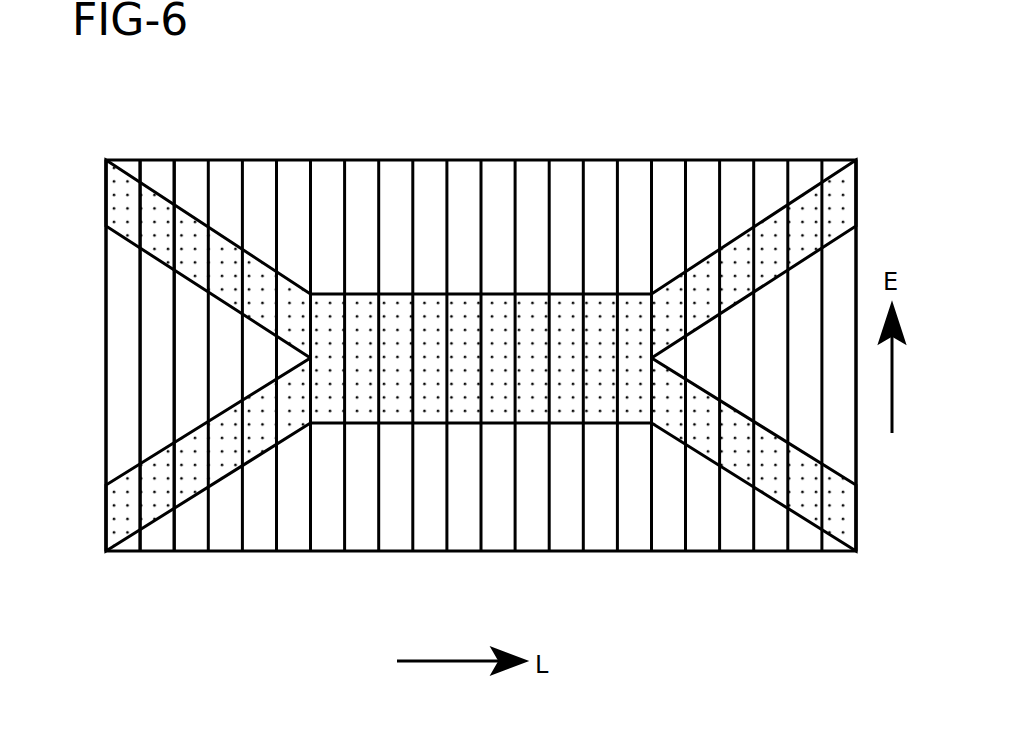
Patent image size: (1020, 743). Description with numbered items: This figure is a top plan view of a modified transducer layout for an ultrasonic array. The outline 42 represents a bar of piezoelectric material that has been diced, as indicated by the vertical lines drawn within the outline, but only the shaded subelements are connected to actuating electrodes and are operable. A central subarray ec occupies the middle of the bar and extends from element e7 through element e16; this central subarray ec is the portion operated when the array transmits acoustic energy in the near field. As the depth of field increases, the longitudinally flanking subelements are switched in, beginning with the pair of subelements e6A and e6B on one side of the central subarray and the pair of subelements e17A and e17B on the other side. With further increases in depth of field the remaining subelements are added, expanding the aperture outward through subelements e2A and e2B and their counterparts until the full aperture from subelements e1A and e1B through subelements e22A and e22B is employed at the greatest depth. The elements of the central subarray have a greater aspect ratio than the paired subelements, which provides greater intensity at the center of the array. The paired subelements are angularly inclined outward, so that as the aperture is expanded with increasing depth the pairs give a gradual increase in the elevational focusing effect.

The outline 42 is at (703, 166).
The subelement e1A is at (118, 191).
The subelement e1B is at (112, 508).
The subelement e2A is at (157, 242).
The subelement e2B is at (159, 464).
The subelement e6A is at (293, 292).
The subelement e6B is at (291, 425).
The element e7 is at (328, 303).
The central subarray ec is at (432, 302).
The element e16 is at (635, 415).
The subelement e17A is at (670, 290).
The subelement e17B is at (668, 427).
The subelement e22A is at (850, 200).
The subelement e22B is at (852, 520).